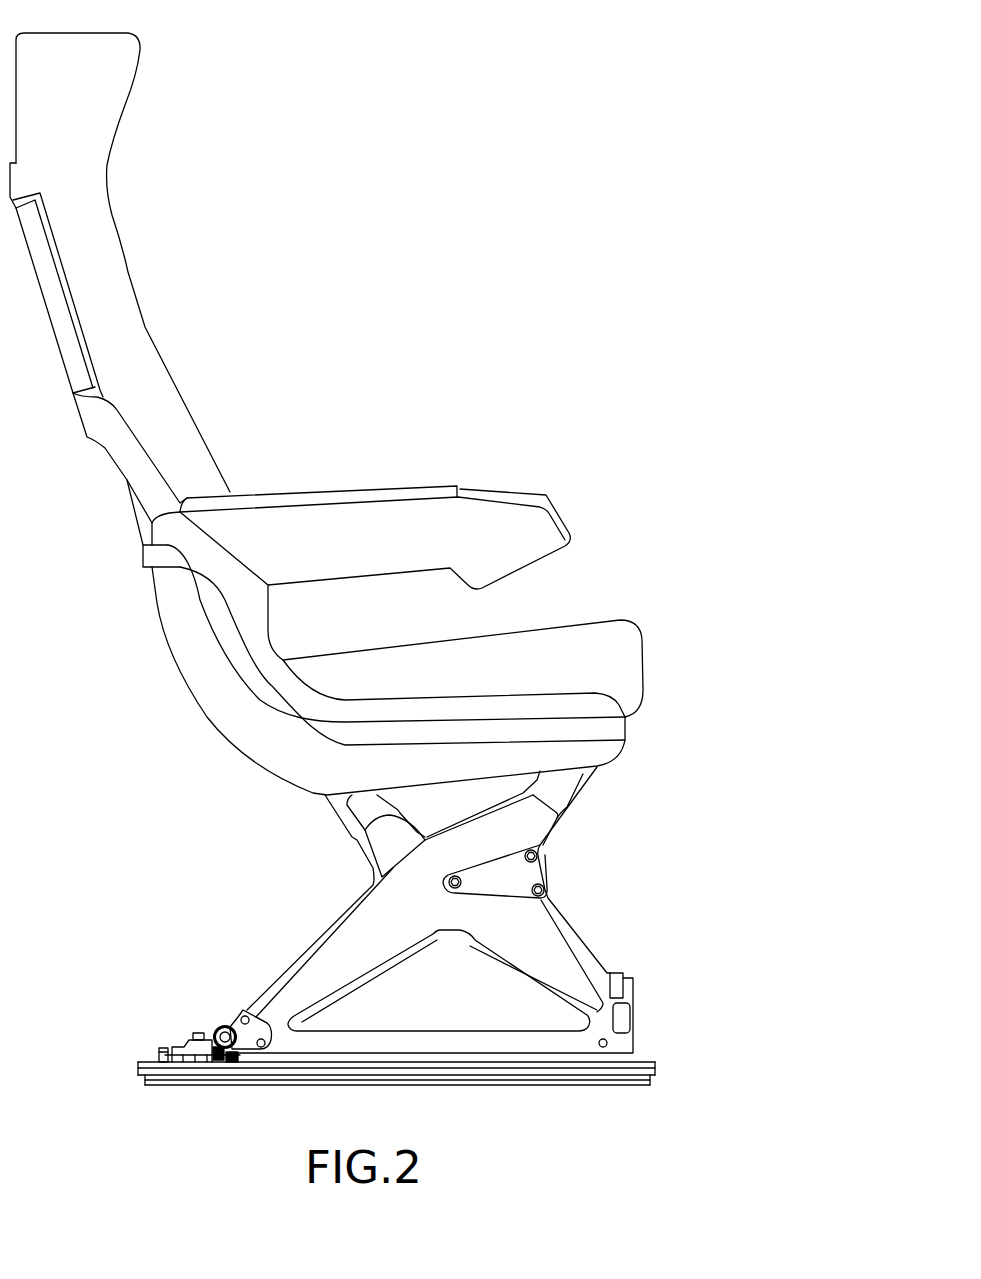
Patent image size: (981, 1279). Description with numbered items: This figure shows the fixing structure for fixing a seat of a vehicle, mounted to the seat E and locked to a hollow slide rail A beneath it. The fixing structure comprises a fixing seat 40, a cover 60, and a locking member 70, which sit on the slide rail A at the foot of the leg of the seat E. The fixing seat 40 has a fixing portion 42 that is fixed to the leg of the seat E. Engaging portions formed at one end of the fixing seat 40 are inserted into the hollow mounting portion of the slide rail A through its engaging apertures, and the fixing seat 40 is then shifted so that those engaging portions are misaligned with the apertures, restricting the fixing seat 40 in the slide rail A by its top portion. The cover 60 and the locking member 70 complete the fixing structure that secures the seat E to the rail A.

The fixing seat 40 is at (160, 1048).
The fixing portion 42 is at (237, 1037).
The cover 60 is at (190, 1040).
The locking member 70 is at (199, 1030).
The slide rail A is at (140, 1067).
The seat E is at (163, 232).